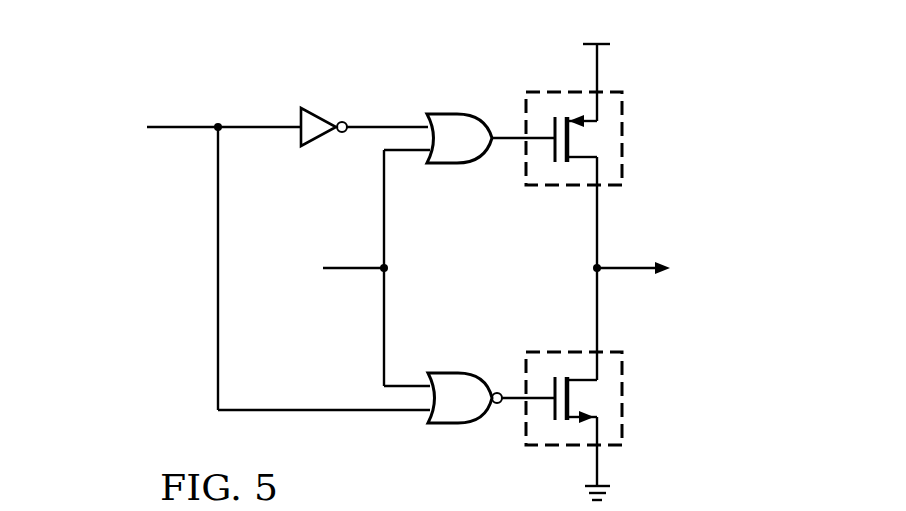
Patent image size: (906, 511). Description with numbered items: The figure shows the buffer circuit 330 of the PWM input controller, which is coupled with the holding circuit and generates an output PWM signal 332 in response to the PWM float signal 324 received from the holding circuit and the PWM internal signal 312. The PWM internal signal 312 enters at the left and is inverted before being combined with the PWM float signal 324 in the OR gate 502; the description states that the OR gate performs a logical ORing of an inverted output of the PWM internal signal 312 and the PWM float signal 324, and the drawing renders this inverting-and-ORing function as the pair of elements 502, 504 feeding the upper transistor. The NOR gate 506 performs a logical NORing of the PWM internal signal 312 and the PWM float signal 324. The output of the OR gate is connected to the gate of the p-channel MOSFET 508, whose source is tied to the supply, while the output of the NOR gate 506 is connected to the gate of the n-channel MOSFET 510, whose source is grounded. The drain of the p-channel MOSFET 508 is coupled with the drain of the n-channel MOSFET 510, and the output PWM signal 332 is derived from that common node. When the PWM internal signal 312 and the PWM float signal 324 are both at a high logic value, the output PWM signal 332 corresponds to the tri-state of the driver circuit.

The PWM internal signal 312 is at (190, 126).
The PWM float signal 324 is at (363, 270).
The buffer circuit 330 is at (703, 67).
The output PWM signal 332 is at (625, 270).
The OR gate 502 is at (323, 110).
The OR gate 504 is at (455, 113).
The NOR gate 506 is at (455, 425).
The p-channel MOSFET 508 is at (562, 92).
The n-channel MOSFET 510 is at (562, 447).